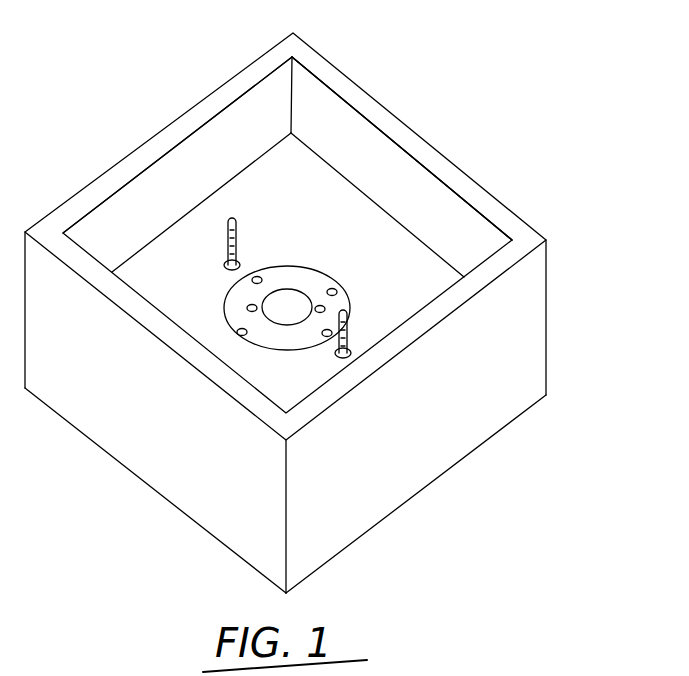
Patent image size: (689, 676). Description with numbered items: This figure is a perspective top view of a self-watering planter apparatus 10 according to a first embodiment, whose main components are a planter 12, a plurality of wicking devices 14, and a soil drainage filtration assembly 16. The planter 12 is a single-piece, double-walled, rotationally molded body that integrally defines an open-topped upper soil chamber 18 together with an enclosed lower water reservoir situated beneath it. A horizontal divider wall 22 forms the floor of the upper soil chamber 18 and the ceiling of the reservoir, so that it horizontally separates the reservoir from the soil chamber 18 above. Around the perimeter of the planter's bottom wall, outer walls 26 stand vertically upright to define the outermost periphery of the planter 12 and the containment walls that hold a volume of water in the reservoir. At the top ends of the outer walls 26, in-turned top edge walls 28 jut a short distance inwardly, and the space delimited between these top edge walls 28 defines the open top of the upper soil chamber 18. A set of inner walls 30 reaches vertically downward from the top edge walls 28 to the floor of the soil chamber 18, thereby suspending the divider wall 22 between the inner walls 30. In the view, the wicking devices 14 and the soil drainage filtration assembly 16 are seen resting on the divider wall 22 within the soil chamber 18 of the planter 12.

The self-watering planter apparatus 10 is at (322, 309).
The planter 12 is at (322, 309).
The wicking devices 14 is at (238, 230).
The soil drainage filtration assembly 16 is at (292, 280).
The upper soil chamber 18 is at (353, 143).
The horizontal divider wall 22 is at (147, 265).
The outer walls 26 is at (158, 485).
The top edge walls 28 is at (209, 105).
The inner walls 30 is at (277, 89).